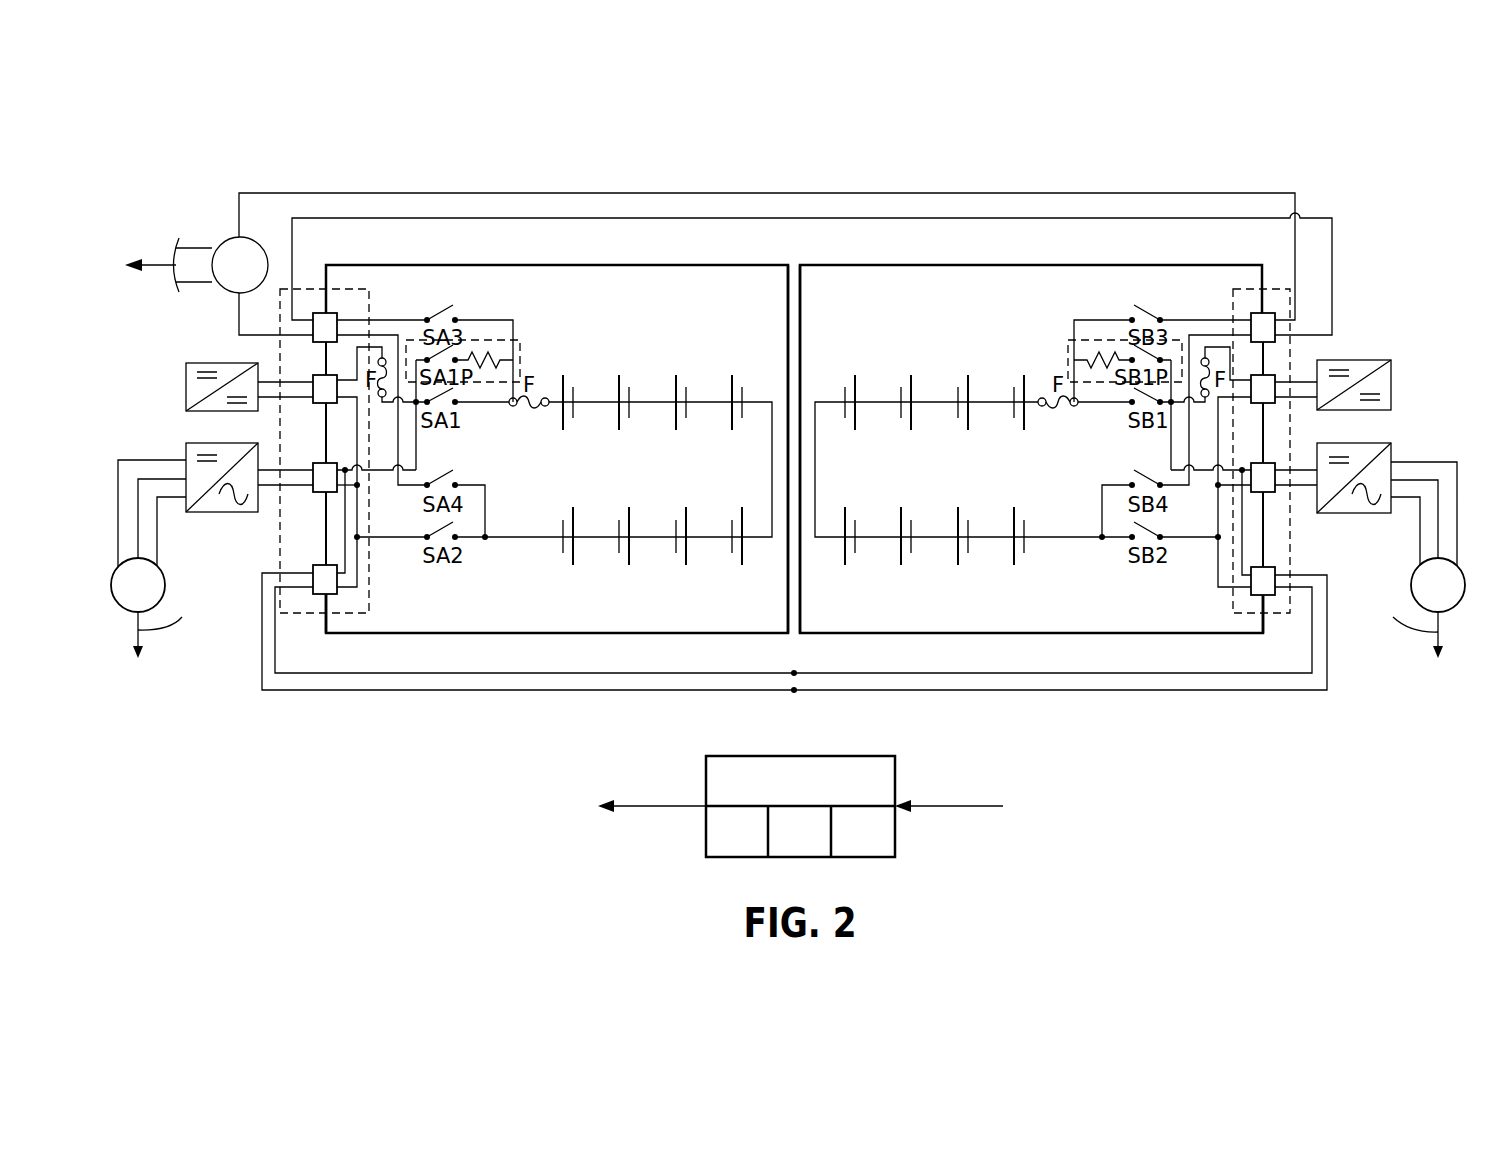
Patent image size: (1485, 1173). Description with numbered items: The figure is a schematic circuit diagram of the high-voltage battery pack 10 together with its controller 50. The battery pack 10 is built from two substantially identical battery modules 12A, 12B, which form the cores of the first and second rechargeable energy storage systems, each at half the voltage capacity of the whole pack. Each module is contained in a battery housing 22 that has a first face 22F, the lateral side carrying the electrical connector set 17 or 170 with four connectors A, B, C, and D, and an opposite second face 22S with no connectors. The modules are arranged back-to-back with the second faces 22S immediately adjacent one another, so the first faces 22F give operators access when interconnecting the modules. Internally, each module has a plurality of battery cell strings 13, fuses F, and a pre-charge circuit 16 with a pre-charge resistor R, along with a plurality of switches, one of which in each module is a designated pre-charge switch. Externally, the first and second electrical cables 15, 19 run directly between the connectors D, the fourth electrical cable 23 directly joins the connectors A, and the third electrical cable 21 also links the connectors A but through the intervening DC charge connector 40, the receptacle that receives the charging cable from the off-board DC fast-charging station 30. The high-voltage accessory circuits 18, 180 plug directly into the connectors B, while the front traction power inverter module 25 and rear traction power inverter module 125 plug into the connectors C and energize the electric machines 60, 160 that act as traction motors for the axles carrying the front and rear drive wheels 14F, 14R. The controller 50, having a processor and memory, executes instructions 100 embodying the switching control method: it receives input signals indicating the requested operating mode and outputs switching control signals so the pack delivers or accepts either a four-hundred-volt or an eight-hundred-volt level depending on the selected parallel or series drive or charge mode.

The battery pack 10 is at (1292, 148).
The battery module 12A is at (676, 319).
The battery module 12B is at (905, 316).
The battery cell strings 13 is at (553, 417).
The front drive wheels 14F is at (155, 640).
The rear drive wheels 14R is at (1427, 640).
The first electrical cable 15 is at (1145, 690).
The pre-charge circuit 16 is at (522, 360).
The electrical connector set 17 is at (312, 288).
The electrical connector set 170 is at (1254, 290).
The high-voltage accessory circuit 18 is at (186, 387).
The high-voltage accessory circuit 180 is at (1391, 385).
The second electrical cable 19 is at (1078, 673).
The third electrical cable 21 is at (1080, 193).
The battery housing 22 is at (680, 265).
The second face 22S is at (797, 287).
The first face 22F is at (323, 622).
The fourth electrical cable 23 is at (1015, 218).
The front traction power inverter module 25 is at (185, 453).
The rear traction power inverter module 125 is at (1391, 450).
The DC fast-charging station 30 is at (138, 255).
The DC charge connector 40 is at (223, 242).
The controller 50 is at (800, 806).
The electric machine 60 is at (165, 583).
The electric machine 160 is at (1411, 583).
The instructions 100 is at (737, 832).